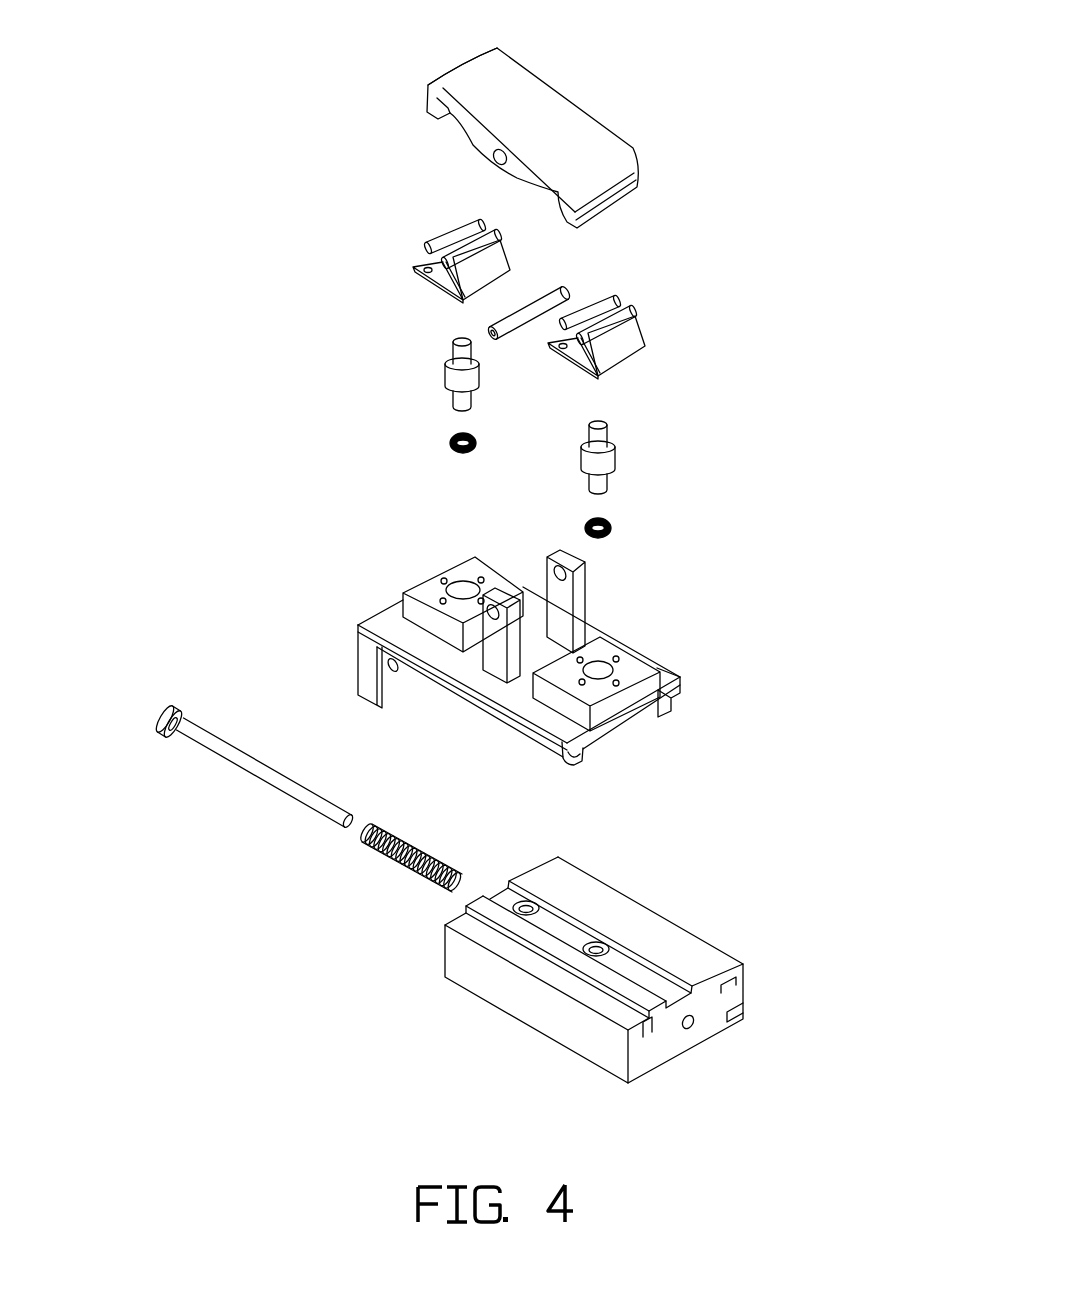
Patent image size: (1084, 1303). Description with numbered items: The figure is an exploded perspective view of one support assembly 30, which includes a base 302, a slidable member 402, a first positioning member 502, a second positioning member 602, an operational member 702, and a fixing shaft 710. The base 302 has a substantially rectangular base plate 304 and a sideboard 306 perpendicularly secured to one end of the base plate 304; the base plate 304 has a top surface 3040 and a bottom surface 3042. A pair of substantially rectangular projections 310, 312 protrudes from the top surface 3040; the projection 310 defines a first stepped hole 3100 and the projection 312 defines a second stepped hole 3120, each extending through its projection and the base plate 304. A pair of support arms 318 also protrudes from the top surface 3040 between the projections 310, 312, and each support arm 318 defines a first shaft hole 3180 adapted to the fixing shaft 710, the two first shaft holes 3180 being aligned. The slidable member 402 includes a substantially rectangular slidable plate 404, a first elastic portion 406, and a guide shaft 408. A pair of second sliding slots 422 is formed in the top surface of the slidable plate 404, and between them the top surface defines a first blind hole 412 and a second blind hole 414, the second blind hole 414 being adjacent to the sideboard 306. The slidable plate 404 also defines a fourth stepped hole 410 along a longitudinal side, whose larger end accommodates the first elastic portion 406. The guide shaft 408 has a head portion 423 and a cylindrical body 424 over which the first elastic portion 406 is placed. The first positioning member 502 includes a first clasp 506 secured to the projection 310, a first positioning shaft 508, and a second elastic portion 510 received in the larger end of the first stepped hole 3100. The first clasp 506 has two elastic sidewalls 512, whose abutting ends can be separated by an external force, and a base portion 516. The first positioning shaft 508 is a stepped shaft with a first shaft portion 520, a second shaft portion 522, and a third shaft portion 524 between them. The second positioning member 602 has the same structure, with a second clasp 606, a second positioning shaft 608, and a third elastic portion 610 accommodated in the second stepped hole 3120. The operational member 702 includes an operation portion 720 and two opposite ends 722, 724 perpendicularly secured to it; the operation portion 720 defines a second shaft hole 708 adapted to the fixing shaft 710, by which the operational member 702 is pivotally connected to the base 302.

The support assembly 30 is at (345, 68).
The operational member 702 is at (616, 33).
The operation portion 720 is at (553, 130).
The end 722 is at (610, 187).
The end 724 is at (510, 54).
The second shaft hole 708 is at (493, 166).
The fixing shaft 710 is at (557, 297).
The second positioning member 602 is at (312, 288).
The second clasp 606 is at (430, 277).
The second positioning shaft 608 is at (450, 358).
The third elastic portion 610 is at (450, 442).
The first positioning member 502 is at (755, 378).
The first clasp 506 is at (620, 355).
The elastic sidewalls 512 is at (630, 333).
The base portion 516 is at (562, 355).
The first positioning shaft 508 is at (613, 447).
The first shaft portion 520 is at (593, 436).
The third shaft portion 524 is at (588, 462).
The second shaft portion 522 is at (595, 480).
The second elastic portion 510 is at (613, 527).
The base 302 is at (692, 693).
The base plate 304 is at (742, 727).
The bottom surface 3042 is at (627, 718).
The top surface 3040 is at (587, 747).
The sideboard 306 is at (363, 667).
The projection 312 is at (423, 592).
The second stepped hole 3120 is at (462, 590).
The support arms 318 is at (562, 588).
The first shaft hole 3180 is at (548, 575).
The projection 310 is at (632, 665).
The first stepped hole 3100 is at (597, 667).
The slidable member 402 is at (392, 1050).
The guide shaft 408 is at (216, 852).
The head portion 423 is at (152, 735).
The cylindrical body 424 is at (260, 772).
The first elastic portion 406 is at (393, 867).
The slidable plate 404 is at (473, 963).
The second blind hole 414 is at (535, 903).
The first blind hole 412 is at (600, 947).
The second sliding slots 422 is at (725, 990).
The fourth stepped hole 410 is at (693, 1027).